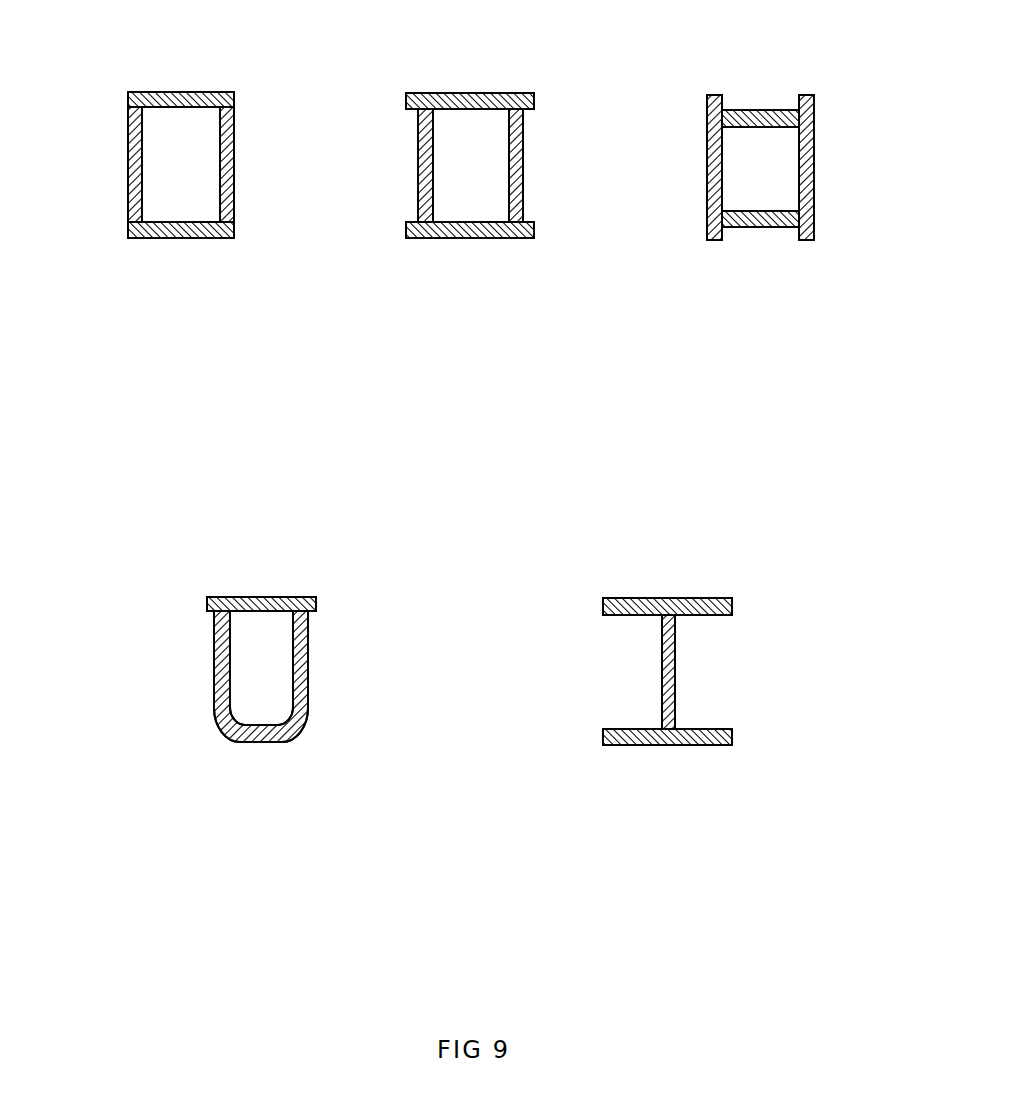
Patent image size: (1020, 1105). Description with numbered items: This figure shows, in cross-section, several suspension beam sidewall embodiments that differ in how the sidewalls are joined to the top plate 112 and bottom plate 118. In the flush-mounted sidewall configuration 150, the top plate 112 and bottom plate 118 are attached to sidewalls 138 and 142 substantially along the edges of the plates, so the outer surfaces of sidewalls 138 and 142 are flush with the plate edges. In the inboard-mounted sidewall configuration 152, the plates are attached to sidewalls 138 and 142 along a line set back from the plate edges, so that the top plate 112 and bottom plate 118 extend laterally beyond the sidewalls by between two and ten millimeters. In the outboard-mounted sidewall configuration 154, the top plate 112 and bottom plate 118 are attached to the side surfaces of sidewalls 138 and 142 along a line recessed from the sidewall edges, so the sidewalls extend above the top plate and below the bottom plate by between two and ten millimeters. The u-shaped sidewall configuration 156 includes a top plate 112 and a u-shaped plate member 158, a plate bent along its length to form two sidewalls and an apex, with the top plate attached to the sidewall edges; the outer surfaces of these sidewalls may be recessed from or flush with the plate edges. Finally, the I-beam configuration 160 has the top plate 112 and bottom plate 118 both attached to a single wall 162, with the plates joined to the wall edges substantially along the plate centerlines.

The top plate 112 is at (182, 92).
The bottom plate 118 is at (182, 238).
The sidewall 138 is at (128, 167).
The sidewall 142 is at (235, 146).
The flush-mounted sidewall configuration 150 is at (184, 252).
The inboard-mounted sidewall configuration 152 is at (471, 253).
The outboard-mounted sidewall configuration 154 is at (760, 254).
The u-shaped sidewall configuration 156 is at (260, 755).
The u-shaped plate member 158 is at (309, 663).
The I-beam configuration 160 is at (669, 755).
The wall 162 is at (675, 672).